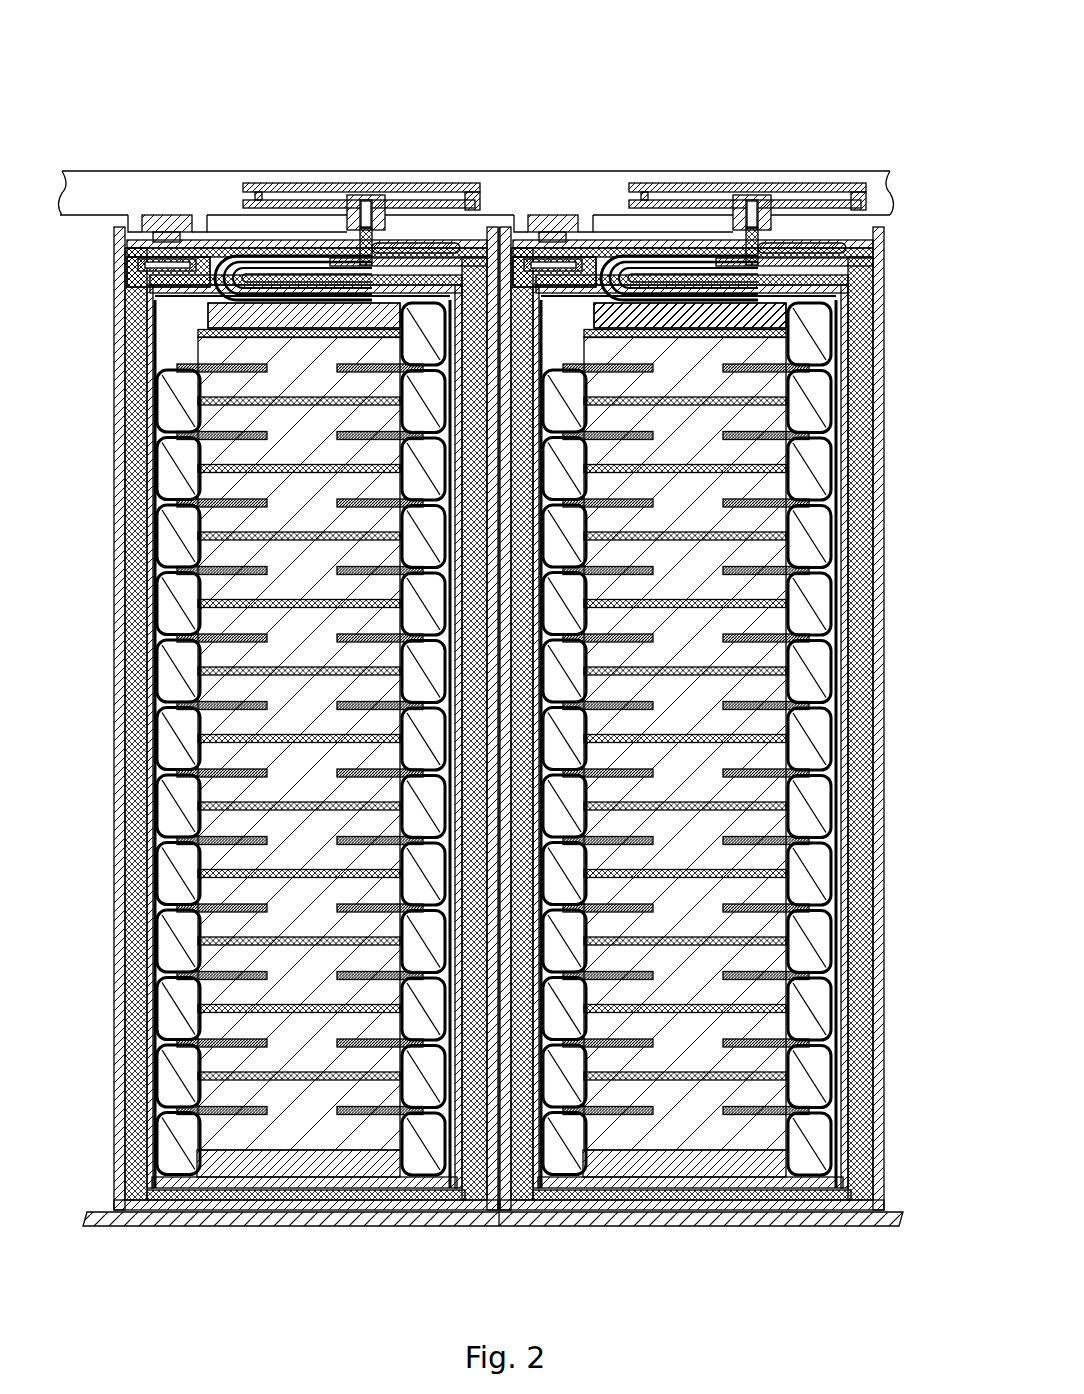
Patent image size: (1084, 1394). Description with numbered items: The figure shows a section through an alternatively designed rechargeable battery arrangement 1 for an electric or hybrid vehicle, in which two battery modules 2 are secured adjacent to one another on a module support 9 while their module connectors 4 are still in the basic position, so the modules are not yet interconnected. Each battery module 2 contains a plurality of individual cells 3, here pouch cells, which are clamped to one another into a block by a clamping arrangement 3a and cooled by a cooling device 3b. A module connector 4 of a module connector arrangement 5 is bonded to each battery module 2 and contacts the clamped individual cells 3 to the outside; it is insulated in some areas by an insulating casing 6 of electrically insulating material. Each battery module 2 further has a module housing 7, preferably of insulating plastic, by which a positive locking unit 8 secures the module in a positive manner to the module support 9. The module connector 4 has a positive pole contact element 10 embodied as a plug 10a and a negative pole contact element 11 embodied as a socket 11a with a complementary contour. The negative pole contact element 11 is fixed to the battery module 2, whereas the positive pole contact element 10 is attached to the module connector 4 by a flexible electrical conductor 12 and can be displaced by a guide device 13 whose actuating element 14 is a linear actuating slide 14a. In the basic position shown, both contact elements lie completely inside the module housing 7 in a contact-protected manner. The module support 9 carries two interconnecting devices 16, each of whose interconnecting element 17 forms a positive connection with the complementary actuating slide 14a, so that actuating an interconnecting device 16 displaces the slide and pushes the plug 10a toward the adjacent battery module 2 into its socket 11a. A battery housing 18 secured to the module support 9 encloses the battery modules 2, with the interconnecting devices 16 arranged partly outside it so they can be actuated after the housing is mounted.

The rechargeable battery arrangement 1 is at (885, 140).
The battery module 2 is at (308, 1198).
The individual cells 3 is at (494, 740).
The clamping arrangement 3a is at (204, 313).
The cooling device 3b is at (150, 370).
The module connector 4 is at (150, 432).
The module connector arrangement 5 is at (895, 238).
The insulating casing 6 is at (120, 520).
The module housing 7 is at (135, 478).
The positive locking unit 8 is at (165, 222).
The module support 9 is at (90, 185).
The positive pole contact element 10 is at (430, 250).
The plug 10a is at (470, 268).
The negative pole contact element 11 is at (134, 262).
The socket 11a is at (140, 283).
The flexible electrical conductor 12 is at (225, 265).
The guide device 13 is at (368, 243).
The actuating element 14 is at (368, 200).
The actuating slide 14a is at (559, 214).
The interconnecting device 16 is at (276, 180).
The interconnecting element 17 is at (352, 212).
The battery housing 18 is at (515, 1226).